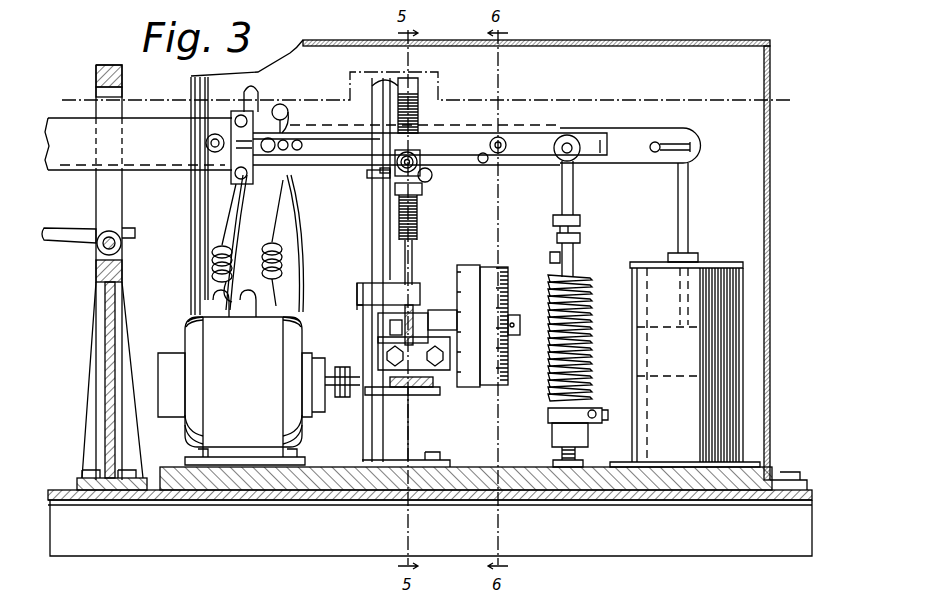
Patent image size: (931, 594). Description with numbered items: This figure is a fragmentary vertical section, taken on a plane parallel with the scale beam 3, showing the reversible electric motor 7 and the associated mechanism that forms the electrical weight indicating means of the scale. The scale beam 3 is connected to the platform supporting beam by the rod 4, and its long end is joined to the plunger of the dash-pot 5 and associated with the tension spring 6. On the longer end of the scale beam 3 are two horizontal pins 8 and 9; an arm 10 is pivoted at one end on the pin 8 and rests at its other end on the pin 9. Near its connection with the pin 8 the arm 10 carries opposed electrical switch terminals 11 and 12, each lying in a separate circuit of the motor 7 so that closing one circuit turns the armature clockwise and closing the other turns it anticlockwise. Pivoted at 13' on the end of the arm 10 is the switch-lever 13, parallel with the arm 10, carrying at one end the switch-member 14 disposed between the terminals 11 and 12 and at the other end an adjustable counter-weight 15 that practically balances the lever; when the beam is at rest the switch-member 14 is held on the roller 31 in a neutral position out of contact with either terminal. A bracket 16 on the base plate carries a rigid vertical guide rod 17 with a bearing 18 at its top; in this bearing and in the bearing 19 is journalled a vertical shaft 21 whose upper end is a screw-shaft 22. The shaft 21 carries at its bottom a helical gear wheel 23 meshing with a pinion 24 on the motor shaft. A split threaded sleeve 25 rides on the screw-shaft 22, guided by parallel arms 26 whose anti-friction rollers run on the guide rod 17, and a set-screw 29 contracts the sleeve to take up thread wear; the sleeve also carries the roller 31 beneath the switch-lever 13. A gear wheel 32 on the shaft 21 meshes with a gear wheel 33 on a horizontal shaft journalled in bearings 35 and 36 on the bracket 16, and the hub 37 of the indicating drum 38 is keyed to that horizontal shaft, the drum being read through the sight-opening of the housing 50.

The scale beam 3 is at (535, 125).
The rod 4 is at (66, 82).
The dash-pot 5 is at (710, 270).
The tension spring 6 is at (593, 350).
The electrical motor 7 is at (185, 335).
The pin 8 is at (205, 145).
The pin 9 is at (485, 163).
The arm 10 is at (465, 115).
The electrical switch terminal 11 is at (240, 176).
The electrical switch terminal 12 is at (234, 113).
The switch-lever 13 is at (514, 130).
The pivot 13' is at (527, 102).
The electrical switch-member 14 is at (270, 141).
The adjustable counter-weight 15 is at (572, 135).
The bracket 16 is at (440, 450).
The vertical guide rod 17 is at (370, 245).
The bearing 18 is at (410, 82).
The bearing 19 is at (415, 283).
The vertical shaft 21 is at (413, 262).
The screw-shaft 22 is at (418, 225).
The gear wheel 23 is at (430, 385).
The gear pinion 24 is at (412, 420).
The threaded sleeve 25 is at (424, 190).
The projecting arms 26 is at (367, 174).
The set-screw 29 is at (432, 175).
The roller 31 is at (395, 170).
The gear wheel 32 is at (450, 300).
The gear wheel 33 is at (357, 300).
The bearing 35 is at (378, 325).
The bearing 36 is at (470, 265).
The hub 37 is at (520, 330).
The drum 38 is at (505, 270).
The housing 50 is at (770, 425).